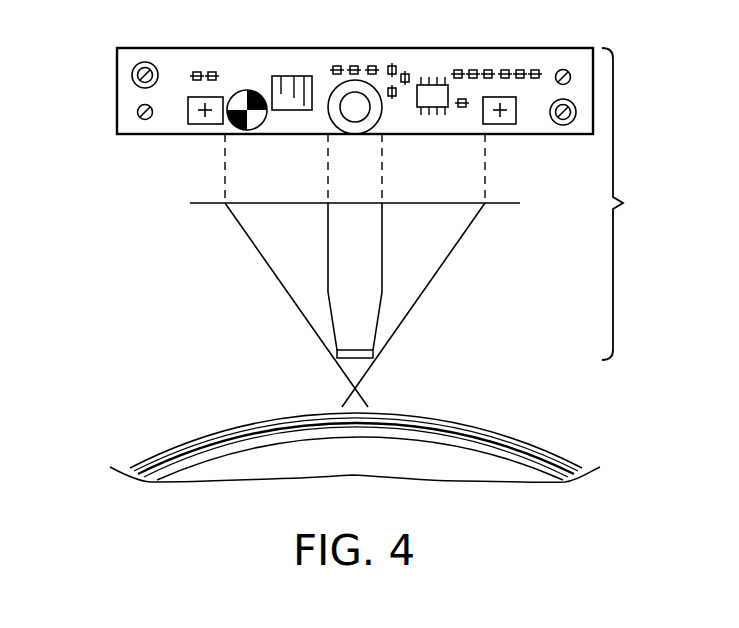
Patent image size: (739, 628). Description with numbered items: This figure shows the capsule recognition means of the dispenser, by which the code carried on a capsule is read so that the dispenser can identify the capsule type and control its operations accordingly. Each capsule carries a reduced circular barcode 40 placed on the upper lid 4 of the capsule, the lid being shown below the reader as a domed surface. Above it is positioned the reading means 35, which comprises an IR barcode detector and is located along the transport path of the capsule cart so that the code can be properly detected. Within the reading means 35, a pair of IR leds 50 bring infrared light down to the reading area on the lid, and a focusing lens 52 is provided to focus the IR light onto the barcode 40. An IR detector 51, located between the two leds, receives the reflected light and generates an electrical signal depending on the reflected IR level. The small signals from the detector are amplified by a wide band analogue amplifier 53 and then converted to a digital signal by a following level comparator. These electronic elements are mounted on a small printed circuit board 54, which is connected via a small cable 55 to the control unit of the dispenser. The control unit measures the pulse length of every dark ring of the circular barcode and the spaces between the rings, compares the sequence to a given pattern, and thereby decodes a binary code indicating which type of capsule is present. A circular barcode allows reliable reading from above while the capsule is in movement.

The upper lid 4 is at (355, 463).
The reading means 35 is at (421, 227).
The barcode 40 is at (505, 436).
The IR leds 50 is at (203, 124).
The IR detector 51 is at (360, 112).
The focusing lens 52 is at (347, 360).
The wide band analogue amplifier 53 is at (433, 93).
The printed circuit board 54 is at (117, 62).
The cable 55 is at (292, 86).